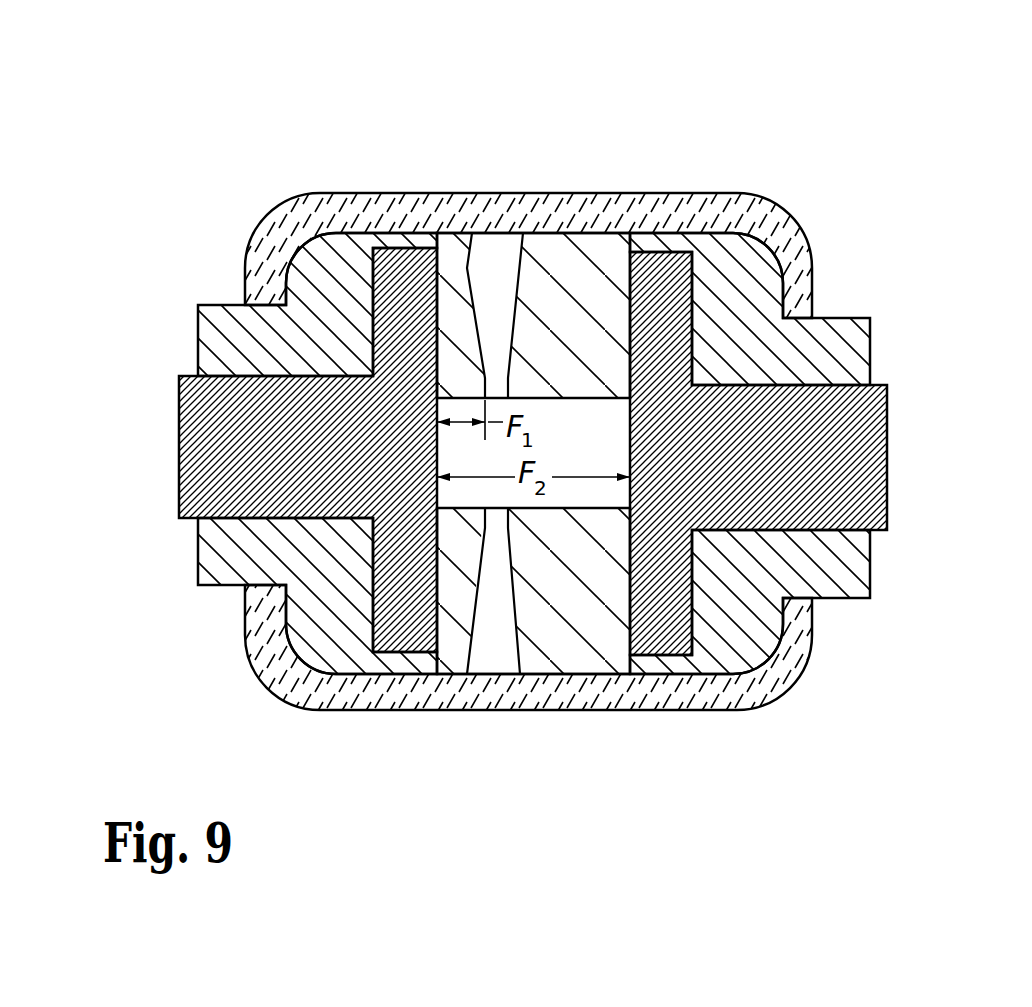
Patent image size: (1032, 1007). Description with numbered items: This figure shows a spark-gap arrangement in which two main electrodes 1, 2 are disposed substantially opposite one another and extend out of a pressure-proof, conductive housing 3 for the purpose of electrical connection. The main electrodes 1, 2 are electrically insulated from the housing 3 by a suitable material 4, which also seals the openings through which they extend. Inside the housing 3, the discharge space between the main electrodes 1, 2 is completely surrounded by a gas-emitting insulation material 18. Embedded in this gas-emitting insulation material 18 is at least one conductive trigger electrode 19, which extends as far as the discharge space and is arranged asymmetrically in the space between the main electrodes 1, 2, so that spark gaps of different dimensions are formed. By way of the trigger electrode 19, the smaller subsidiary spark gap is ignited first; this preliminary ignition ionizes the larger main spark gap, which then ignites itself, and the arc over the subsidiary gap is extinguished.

The main electrode 1 is at (212, 412).
The main electrode 2 is at (857, 463).
The housing 3 is at (790, 240).
The insulating material 4 is at (800, 347).
The gas-emitting insulation material 18 is at (580, 608).
The trigger electrode 19 is at (493, 290).